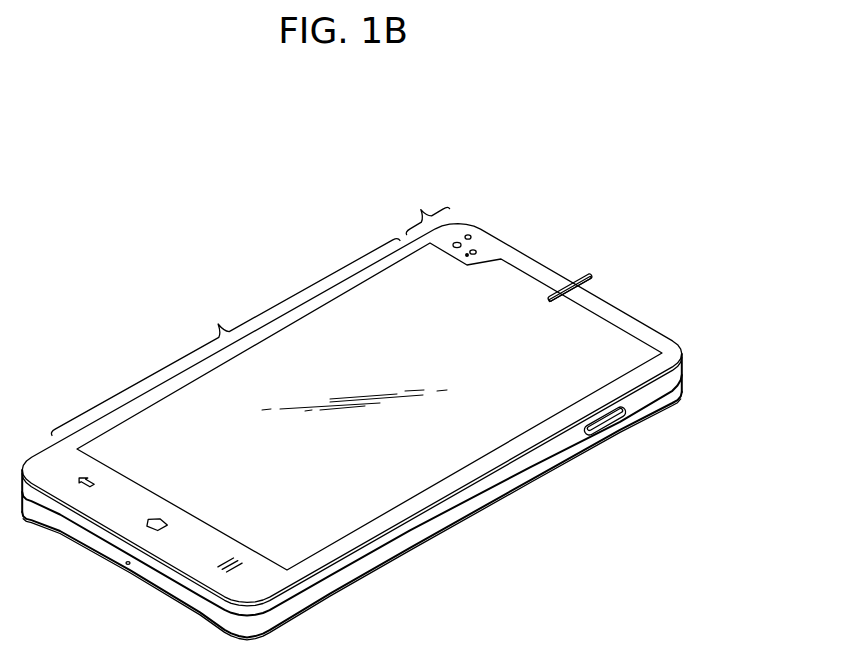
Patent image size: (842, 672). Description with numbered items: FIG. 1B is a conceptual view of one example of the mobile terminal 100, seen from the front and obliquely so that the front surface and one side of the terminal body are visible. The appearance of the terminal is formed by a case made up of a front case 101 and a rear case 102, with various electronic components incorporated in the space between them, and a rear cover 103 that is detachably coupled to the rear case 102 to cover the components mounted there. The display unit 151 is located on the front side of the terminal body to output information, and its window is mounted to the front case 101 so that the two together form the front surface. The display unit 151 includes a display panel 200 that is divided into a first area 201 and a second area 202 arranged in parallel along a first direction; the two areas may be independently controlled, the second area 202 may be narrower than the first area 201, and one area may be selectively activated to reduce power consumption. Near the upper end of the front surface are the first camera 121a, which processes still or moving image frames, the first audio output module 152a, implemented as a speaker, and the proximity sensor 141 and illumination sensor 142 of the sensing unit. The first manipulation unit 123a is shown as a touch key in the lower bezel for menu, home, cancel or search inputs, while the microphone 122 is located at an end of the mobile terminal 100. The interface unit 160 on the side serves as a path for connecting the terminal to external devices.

The mobile terminal 100 is at (626, 290).
The front case 101 is at (684, 367).
The rear case 102 is at (680, 381).
The rear cover 103 is at (674, 400).
The first camera 121a is at (456, 242).
The microphone 122 is at (122, 567).
The first manipulation unit 123a is at (222, 567).
The proximity sensor 141 is at (470, 255).
The illumination sensor 142 is at (480, 256).
The display unit 151 is at (388, 305).
The first audio output module 152a is at (471, 235).
The interface unit 160 is at (607, 426).
The display panel 200 is at (250, 307).
The first area 201 is at (225, 337).
The second area 202 is at (424, 207).